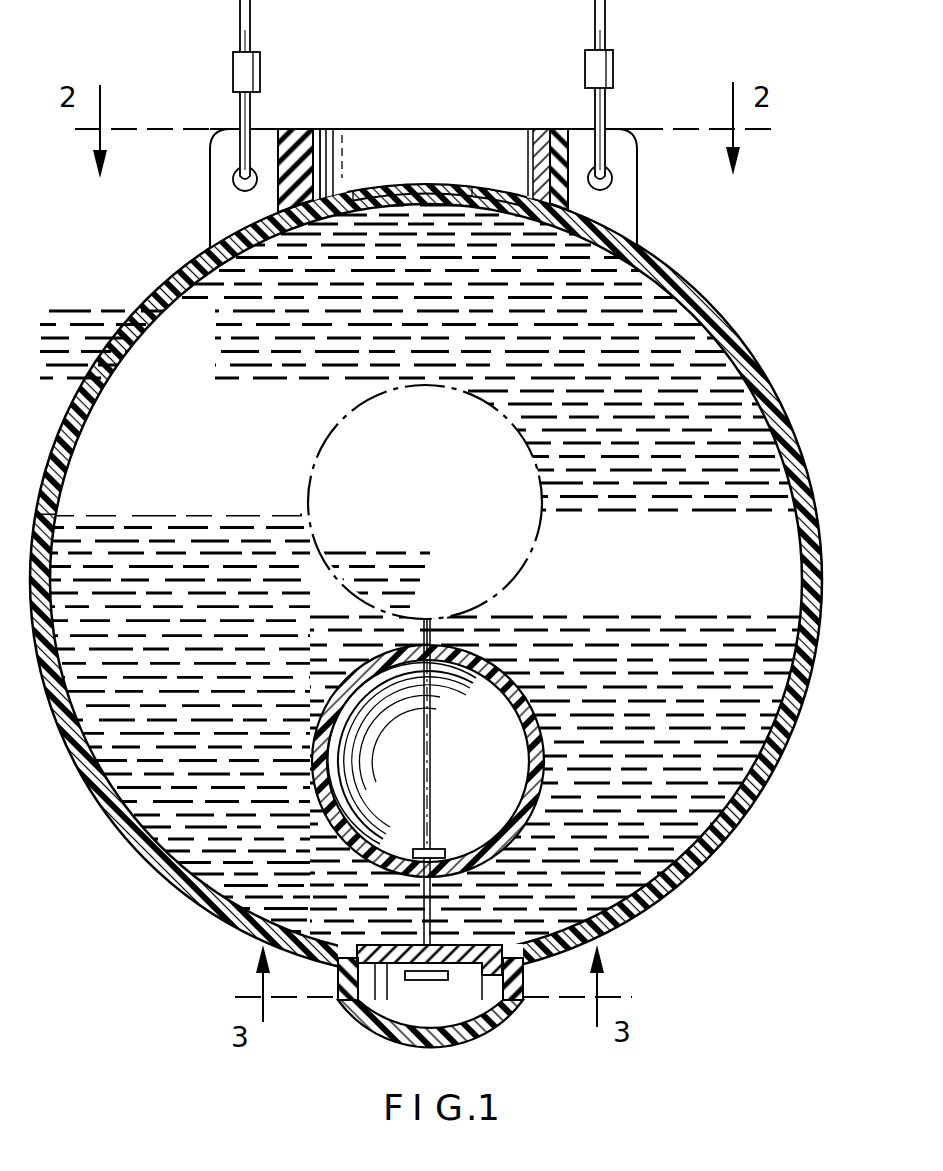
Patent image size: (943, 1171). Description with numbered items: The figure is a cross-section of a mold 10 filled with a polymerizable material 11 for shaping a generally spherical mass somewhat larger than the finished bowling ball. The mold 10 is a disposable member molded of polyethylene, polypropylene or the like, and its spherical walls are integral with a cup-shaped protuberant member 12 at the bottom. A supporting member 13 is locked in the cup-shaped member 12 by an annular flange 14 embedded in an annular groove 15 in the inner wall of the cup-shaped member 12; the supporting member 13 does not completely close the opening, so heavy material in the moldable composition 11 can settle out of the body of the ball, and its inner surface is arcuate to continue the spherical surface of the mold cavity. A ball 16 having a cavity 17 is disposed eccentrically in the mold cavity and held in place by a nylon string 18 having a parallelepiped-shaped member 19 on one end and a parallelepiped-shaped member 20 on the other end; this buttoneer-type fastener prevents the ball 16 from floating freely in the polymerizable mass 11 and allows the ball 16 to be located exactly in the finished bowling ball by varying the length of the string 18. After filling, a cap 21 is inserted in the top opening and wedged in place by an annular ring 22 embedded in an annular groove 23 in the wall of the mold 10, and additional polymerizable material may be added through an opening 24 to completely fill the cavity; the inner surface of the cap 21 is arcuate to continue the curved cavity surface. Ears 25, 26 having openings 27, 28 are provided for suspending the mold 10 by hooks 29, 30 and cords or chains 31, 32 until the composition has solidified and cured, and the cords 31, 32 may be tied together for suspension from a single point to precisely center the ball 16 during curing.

The mold 10 is at (766, 364).
The polymerizable material 11 is at (401, 348).
The cup-shaped protuberant member 12 is at (393, 1040).
The supporting member 13 is at (405, 948).
The annular flange 14 is at (522, 978).
The annular groove 15 is at (370, 975).
The ball 16 is at (538, 533).
The cavity 17 is at (450, 766).
The nylon string 18 is at (433, 915).
The parallelepiped-shaped member 19 is at (437, 848).
The parallelepiped-shaped member 20 is at (440, 982).
The cap 21 is at (437, 180).
The annular ring 22 is at (543, 178).
The annular groove 23 is at (566, 172).
The opening 24 is at (370, 186).
The ear 25 is at (222, 160).
The ear 26 is at (621, 158).
The opening 27 is at (236, 187).
The opening 28 is at (606, 184).
The hook 29 is at (243, 107).
The hook 30 is at (606, 107).
The cord or chain 31 is at (240, 21).
The cord or chain 32 is at (606, 26).